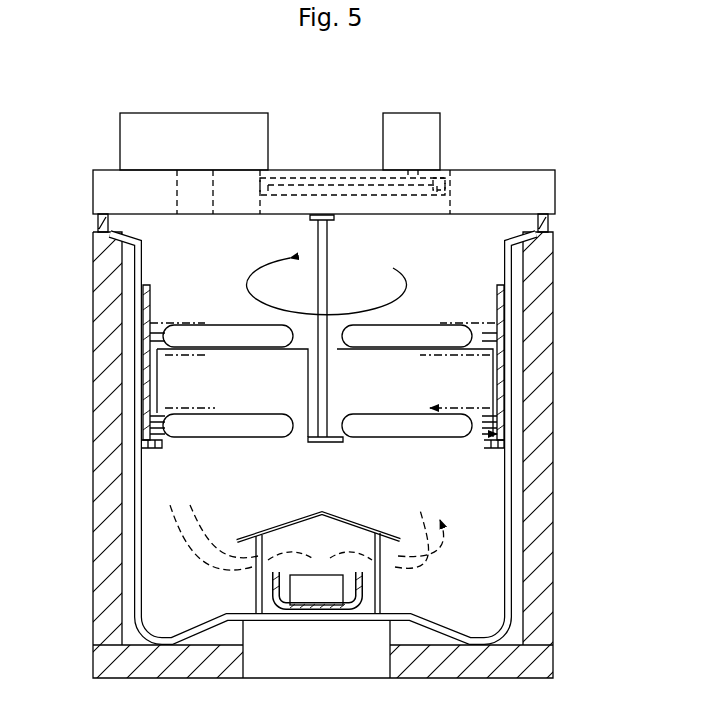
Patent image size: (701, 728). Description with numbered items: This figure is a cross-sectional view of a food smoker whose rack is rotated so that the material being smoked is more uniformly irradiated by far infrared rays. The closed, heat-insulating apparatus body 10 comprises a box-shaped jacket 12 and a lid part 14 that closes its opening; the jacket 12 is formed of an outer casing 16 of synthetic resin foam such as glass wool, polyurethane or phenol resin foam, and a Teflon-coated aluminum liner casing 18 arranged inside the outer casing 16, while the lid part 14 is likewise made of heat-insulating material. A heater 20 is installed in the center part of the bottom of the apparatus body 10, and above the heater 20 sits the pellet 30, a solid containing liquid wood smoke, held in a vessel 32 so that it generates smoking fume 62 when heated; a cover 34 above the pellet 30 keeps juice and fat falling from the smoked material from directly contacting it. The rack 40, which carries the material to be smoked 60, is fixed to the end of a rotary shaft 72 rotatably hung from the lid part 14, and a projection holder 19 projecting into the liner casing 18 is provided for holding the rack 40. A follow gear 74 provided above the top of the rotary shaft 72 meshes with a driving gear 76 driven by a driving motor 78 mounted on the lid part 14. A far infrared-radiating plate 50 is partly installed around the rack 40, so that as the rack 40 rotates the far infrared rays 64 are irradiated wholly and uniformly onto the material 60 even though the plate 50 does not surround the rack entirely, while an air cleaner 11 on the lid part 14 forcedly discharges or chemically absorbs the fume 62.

The apparatus body 10 is at (92, 354).
The air cleaner 11 is at (218, 125).
The box-shaped jacket 12 is at (92, 397).
The lid part 14 is at (540, 180).
The outer casing 16 is at (100, 442).
The liner casing 18 is at (135, 528).
The projection holder 19 is at (150, 456).
The heater 20 is at (333, 645).
The pellet 30 is at (272, 591).
The vessel 32 is at (363, 588).
The cover 34 is at (325, 510).
The rack 40 is at (414, 440).
The far infrared-radiating plate 50 is at (142, 303).
The material to be smoked 60 is at (233, 422).
The fume 62 is at (446, 542).
The far infrared rays 64 is at (178, 320).
The rotary shaft 72 is at (329, 239).
The follow gear 74 is at (298, 185).
The driving gear 76 is at (445, 180).
The driving motor 78 is at (412, 125).